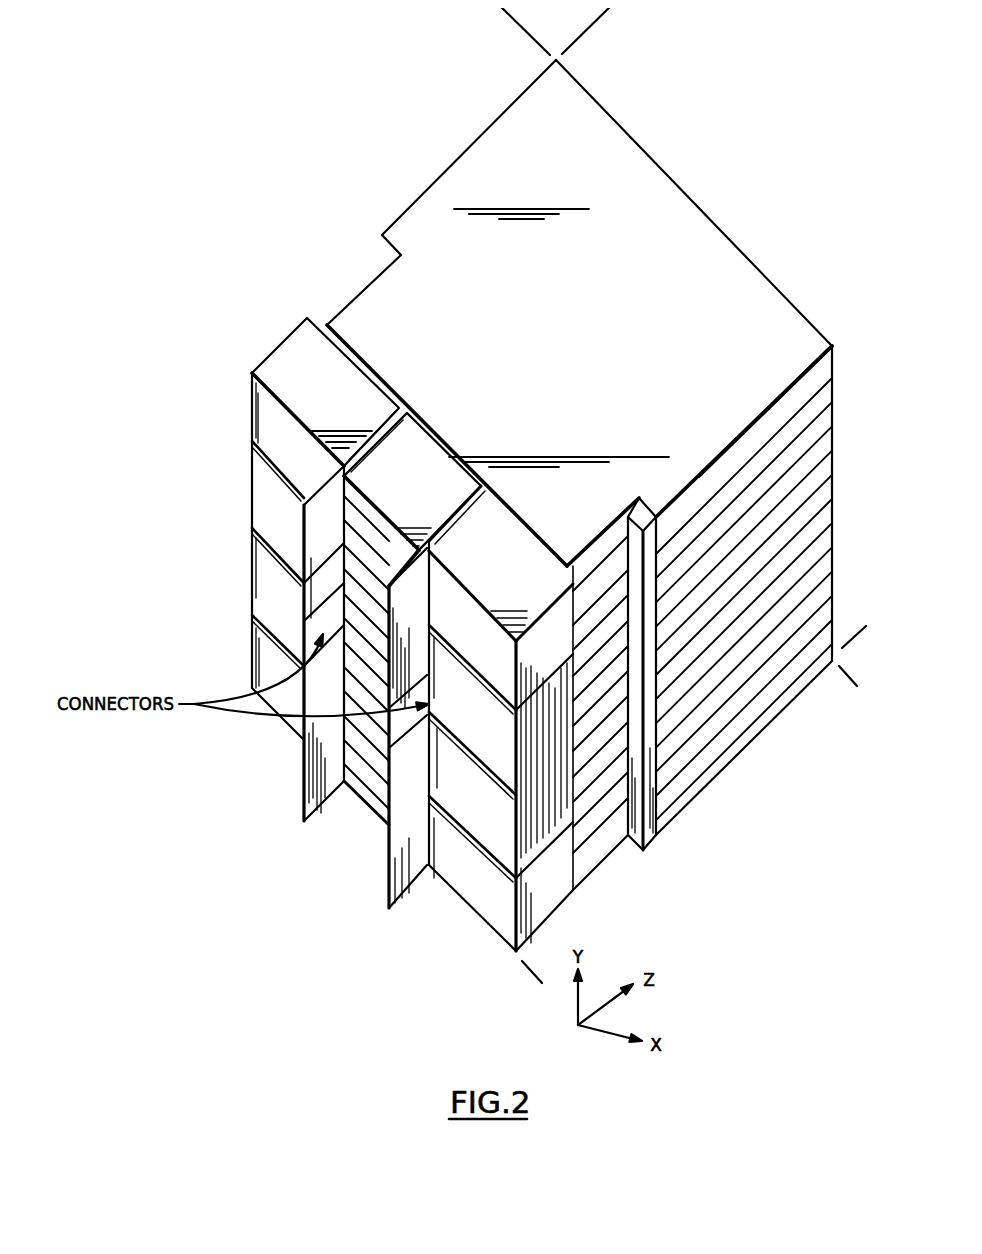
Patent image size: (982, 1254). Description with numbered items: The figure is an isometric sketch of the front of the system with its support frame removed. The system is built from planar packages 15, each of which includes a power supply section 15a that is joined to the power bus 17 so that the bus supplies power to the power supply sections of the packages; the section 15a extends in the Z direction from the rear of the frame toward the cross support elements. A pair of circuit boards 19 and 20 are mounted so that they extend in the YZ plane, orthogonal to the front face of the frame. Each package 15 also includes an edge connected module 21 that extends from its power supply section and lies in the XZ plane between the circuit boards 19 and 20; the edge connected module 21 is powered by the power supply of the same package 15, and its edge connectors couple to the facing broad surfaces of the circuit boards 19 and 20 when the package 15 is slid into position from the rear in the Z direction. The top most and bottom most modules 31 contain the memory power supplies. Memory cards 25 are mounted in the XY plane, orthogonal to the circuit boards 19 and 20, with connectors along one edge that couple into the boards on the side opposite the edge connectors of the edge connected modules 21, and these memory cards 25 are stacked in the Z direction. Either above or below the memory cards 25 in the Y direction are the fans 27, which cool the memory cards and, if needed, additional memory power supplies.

The planar package 15 is at (685, 218).
The power supply section 15a is at (770, 310).
The power bus 17 is at (650, 842).
The circuit board 19 is at (313, 780).
The circuit board 20 is at (405, 880).
The edge connected module 21 is at (382, 765).
The memory card 25 is at (472, 713).
The fan 27 is at (352, 382).
The ECM containing memory power supplies 31 is at (372, 797).